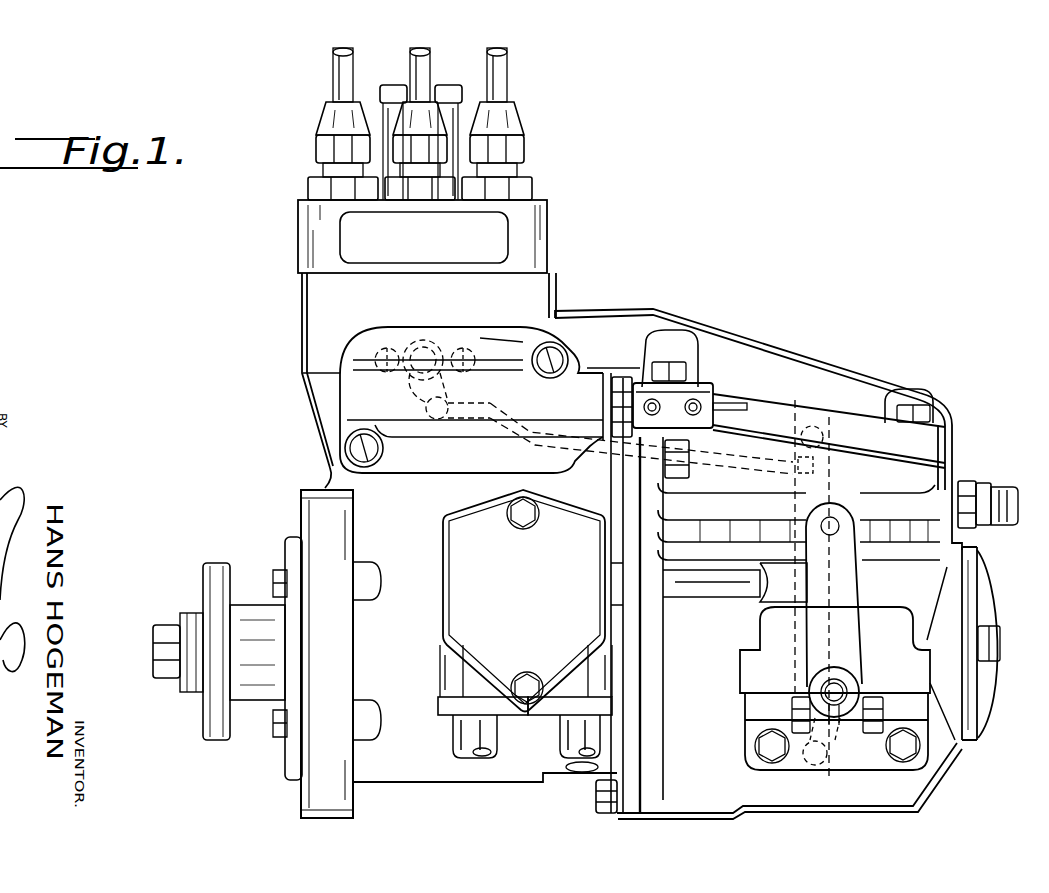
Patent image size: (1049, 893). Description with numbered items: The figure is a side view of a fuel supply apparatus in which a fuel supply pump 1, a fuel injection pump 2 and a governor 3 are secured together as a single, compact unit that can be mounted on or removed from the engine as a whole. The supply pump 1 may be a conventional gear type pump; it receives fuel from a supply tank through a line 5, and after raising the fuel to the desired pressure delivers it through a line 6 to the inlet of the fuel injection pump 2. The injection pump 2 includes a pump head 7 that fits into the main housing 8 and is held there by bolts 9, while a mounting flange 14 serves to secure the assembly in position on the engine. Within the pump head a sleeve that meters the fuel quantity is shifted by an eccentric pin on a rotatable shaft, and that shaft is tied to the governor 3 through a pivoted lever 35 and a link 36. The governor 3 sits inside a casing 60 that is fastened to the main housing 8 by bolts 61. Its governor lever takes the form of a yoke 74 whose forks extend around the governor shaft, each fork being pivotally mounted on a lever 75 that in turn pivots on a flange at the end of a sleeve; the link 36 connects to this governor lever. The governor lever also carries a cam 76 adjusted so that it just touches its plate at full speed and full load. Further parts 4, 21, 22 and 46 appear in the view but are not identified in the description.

The fuel supply pump 1 is at (457, 545).
The fuel injection pump 2 is at (322, 397).
The governor 3 is at (950, 603).
The control lever 4 is at (848, 635).
The line 5 is at (575, 733).
The line 6 is at (467, 737).
The pump head 7 is at (527, 231).
The main housing 8 is at (400, 767).
The bolts 9 is at (540, 186).
The mounting flange 14 is at (307, 507).
The delivery valve holder 21 is at (520, 117).
The fuel delivery pipe 22 is at (495, 62).
The pivoted lever 35 is at (396, 391).
The link 36 is at (502, 404).
The pipe nut 46 is at (396, 90).
The casing 60 is at (910, 787).
The bolts 61 is at (597, 798).
The yoke 74 is at (830, 482).
The lever 75 is at (826, 776).
The cam 76 is at (825, 417).